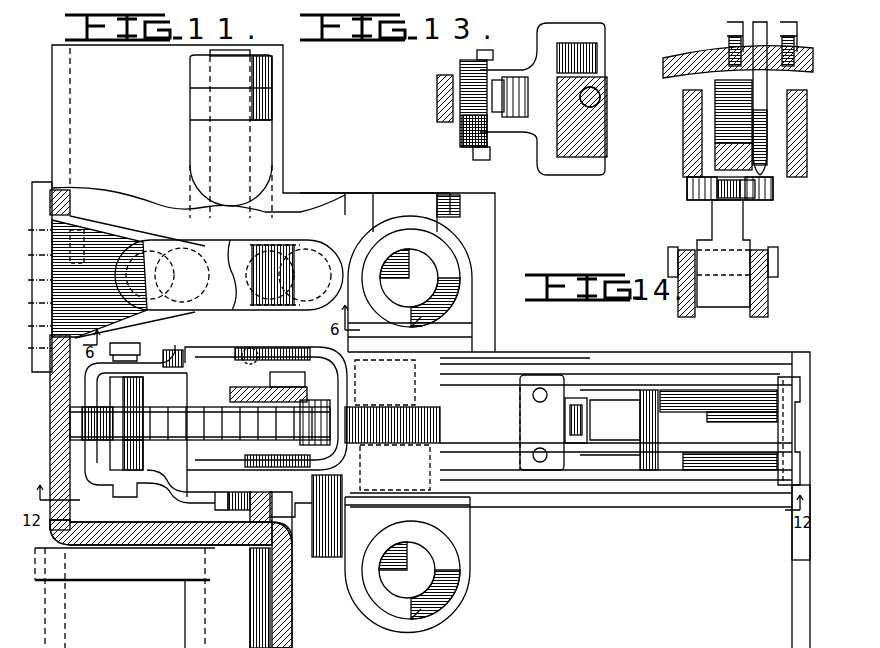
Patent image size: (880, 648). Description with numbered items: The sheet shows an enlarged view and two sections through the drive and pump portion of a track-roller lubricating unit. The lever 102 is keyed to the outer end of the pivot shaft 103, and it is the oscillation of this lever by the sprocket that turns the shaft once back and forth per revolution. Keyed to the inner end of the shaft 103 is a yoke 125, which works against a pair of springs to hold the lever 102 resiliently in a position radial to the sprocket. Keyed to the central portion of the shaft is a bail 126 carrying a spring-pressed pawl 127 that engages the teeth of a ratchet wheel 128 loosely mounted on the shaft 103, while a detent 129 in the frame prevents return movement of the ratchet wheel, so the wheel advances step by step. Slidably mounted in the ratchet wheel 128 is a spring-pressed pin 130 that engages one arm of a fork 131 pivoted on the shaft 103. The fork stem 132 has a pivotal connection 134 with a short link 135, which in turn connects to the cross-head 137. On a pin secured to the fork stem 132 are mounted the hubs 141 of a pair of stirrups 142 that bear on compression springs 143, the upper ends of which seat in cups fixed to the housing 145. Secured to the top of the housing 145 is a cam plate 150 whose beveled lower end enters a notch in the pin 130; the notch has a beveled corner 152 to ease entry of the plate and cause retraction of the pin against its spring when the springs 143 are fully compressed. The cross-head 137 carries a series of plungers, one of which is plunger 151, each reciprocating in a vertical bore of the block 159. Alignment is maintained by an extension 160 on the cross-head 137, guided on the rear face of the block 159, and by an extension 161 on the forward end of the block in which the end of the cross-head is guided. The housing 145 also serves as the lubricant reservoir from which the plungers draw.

In FIG. 11, the lever 102 is at (125, 575).
In FIG. 11, the pivot shaft 103 is at (220, 155).
In FIG. 11, the yoke 125 is at (185, 248).
In FIG. 11, the bail 126 is at (160, 500).
In FIG. 11, the spring-pressed pawl 127 is at (137, 410).
In FIG. 11, the ratchet wheel 128 is at (190, 432).
In FIG. 13, the ratchet wheel 128 is at (447, 108).
In FIG. 14, the ratchet wheel 128 is at (727, 125).
In FIG. 13, the detent 129 is at (518, 112).
In FIG. 14, the detent 129 is at (730, 267).
In FIG. 13, the pin 130 is at (473, 132).
In FIG. 14, the pin 130 is at (693, 200).
In FIG. 11, the fork 131 is at (238, 358).
In FIG. 14, the fork 131 is at (693, 178).
In FIG. 11, the fork stem 132 is at (495, 430).
In FIG. 11, the pivotal connection 134 is at (578, 470).
In FIG. 11, the short link 135 is at (570, 470).
In FIG. 11, the cross-head 137 is at (730, 460).
In FIG. 13, the cross-head 137 is at (597, 52).
In FIG. 11, the hubs 141 is at (425, 400).
In FIG. 11, the stirrups 142 is at (460, 310).
In FIG. 11, the compression springs 143 is at (440, 255).
In FIG. 11, the housing 145 is at (168, 535).
In FIG. 14, the housing 145 is at (690, 53).
In FIG. 11, the cam plate 150 is at (243, 384).
In FIG. 14, the cam plate 150 is at (768, 82).
In FIG. 13, the plunger 151 is at (593, 90).
In FIG. 14, the plunger 151 is at (738, 200).
In FIG. 14, the beveled corner 152 is at (755, 200).
In FIG. 11, the block 159 is at (650, 602).
In FIG. 13, the block 159 is at (597, 143).
In FIG. 13, the extension 160 is at (563, 115).
In FIG. 11, the extension 161 is at (800, 388).